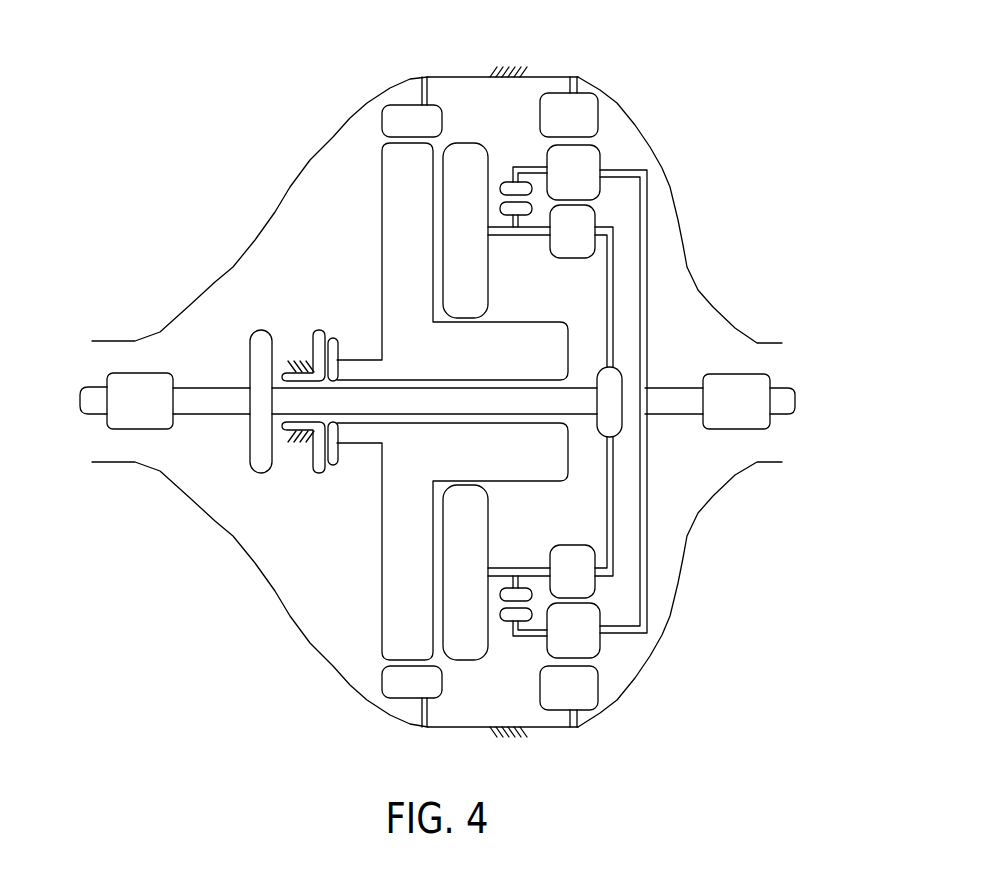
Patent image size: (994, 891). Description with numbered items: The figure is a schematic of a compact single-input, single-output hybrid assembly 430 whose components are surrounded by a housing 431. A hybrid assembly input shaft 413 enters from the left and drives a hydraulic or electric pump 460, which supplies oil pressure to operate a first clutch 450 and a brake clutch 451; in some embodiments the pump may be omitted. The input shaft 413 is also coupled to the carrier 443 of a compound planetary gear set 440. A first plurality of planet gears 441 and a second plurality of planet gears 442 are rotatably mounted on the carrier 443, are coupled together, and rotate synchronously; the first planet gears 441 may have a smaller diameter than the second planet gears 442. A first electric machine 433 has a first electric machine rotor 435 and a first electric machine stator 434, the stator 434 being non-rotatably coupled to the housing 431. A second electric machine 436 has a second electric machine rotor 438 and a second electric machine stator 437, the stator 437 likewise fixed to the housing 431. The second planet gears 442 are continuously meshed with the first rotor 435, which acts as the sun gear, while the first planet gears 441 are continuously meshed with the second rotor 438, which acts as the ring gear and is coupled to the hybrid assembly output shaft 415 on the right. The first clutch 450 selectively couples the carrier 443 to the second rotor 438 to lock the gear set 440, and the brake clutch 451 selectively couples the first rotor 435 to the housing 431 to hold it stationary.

The hybrid assembly input shaft 413 is at (90, 390).
The hybrid assembly output shaft 415 is at (770, 380).
The hybrid assembly 430 is at (718, 59).
The housing 431 is at (511, 61).
The first electric machine 433 is at (386, 85).
The first electric machine stator 434 is at (397, 121).
The first electric machine rotor 435 is at (398, 182).
The second electric machine 436 is at (590, 58).
The second electric machine stator 437 is at (583, 108).
The second electric machine rotor 438 is at (580, 165).
The compound planetary gear set 440 is at (658, 172).
The first plurality of planet gears 441 is at (583, 221).
The second plurality of planet gears 442 is at (470, 165).
The carrier 443 is at (613, 326).
The first clutch 450 is at (511, 150).
The brake clutch 451 is at (340, 323).
The hydraulic or electric pump 460 is at (238, 436).